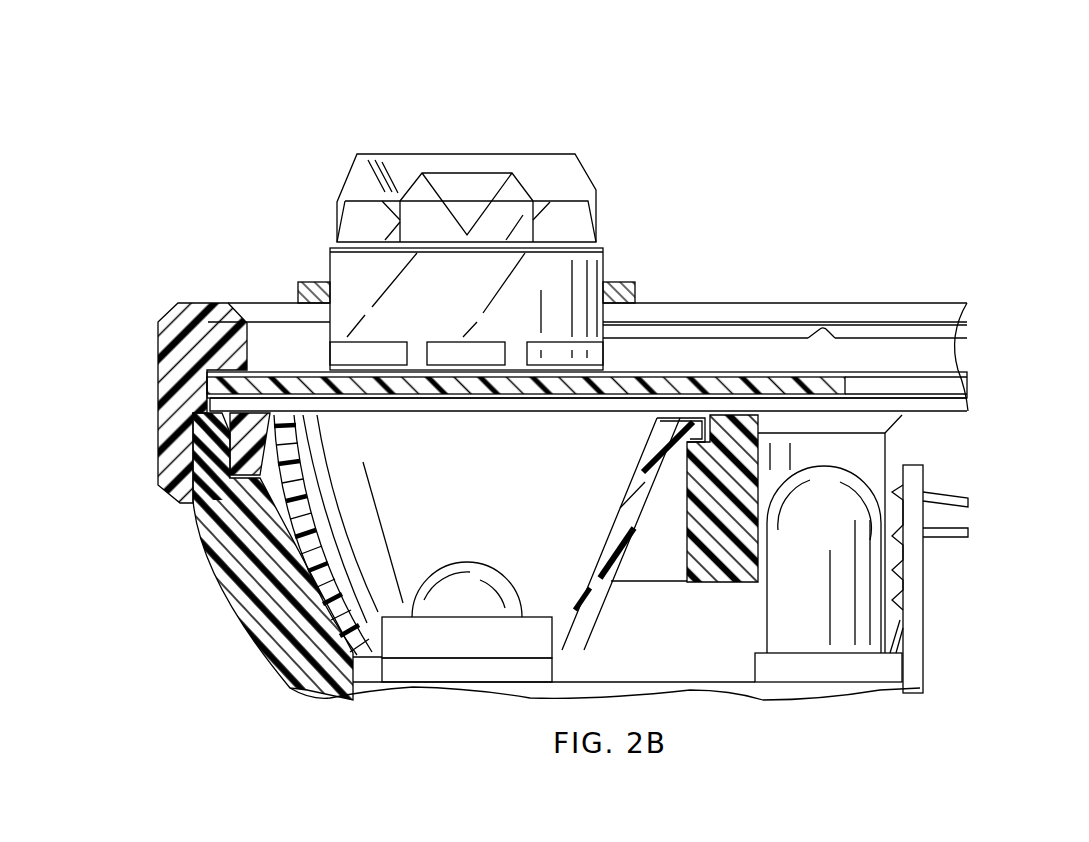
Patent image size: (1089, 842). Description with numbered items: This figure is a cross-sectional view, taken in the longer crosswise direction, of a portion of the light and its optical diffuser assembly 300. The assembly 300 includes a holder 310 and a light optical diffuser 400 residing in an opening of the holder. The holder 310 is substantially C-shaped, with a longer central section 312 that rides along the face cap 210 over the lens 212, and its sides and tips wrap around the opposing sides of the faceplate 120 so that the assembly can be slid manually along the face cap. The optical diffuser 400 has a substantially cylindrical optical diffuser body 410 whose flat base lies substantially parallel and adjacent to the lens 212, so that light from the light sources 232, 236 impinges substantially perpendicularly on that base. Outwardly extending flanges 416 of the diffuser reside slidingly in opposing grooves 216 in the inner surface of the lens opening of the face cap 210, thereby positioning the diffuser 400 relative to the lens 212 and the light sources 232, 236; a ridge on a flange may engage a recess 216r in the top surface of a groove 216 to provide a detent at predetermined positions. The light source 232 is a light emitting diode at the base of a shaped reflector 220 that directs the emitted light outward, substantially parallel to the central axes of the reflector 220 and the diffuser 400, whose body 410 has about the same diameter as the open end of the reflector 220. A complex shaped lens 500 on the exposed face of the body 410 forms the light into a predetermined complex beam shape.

The optical diffuser assembly 300 is at (268, 108).
The faceplate 120 is at (282, 617).
The face cap 210 is at (190, 303).
The lens 212 is at (963, 389).
The groove 216 is at (950, 357).
The recess 216r is at (822, 329).
The reflector 220 is at (637, 500).
The light source 232 is at (497, 574).
The light source 236 is at (778, 602).
The holder 310 is at (622, 276).
The central section 312 is at (310, 282).
The light optical diffuser 400 is at (498, 282).
The optical diffuser body 410 is at (449, 311).
The flanges 416 is at (333, 355).
The complex shaped lens 500 is at (540, 140).